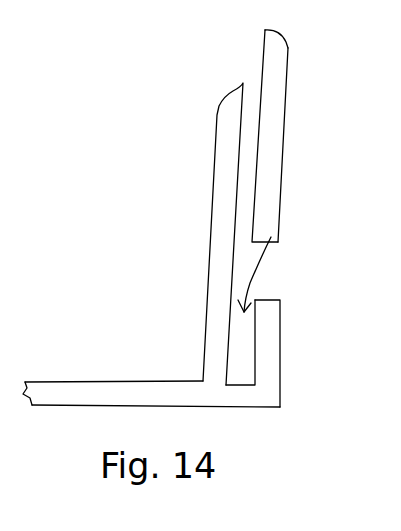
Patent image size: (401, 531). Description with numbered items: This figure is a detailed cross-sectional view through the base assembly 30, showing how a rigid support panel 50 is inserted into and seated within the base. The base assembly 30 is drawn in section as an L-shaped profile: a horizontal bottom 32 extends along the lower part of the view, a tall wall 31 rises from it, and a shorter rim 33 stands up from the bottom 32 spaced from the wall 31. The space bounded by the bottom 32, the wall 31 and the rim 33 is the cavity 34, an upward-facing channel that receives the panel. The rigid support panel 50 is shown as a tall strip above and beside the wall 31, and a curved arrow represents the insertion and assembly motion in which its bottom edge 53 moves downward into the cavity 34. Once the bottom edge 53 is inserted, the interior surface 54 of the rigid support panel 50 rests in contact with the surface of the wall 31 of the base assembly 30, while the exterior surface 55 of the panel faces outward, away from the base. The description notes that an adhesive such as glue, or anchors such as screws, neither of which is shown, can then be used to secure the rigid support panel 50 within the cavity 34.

The base assembly 30 is at (190, 273).
The walls 31 is at (220, 250).
The bottom 32 is at (70, 395).
The rim 33 is at (262, 335).
The cavity 34 is at (240, 368).
The rigid support panel 50 is at (278, 130).
The bottom edge 53 is at (265, 243).
The interior surface 54 is at (264, 52).
The exterior surface 55 is at (286, 145).